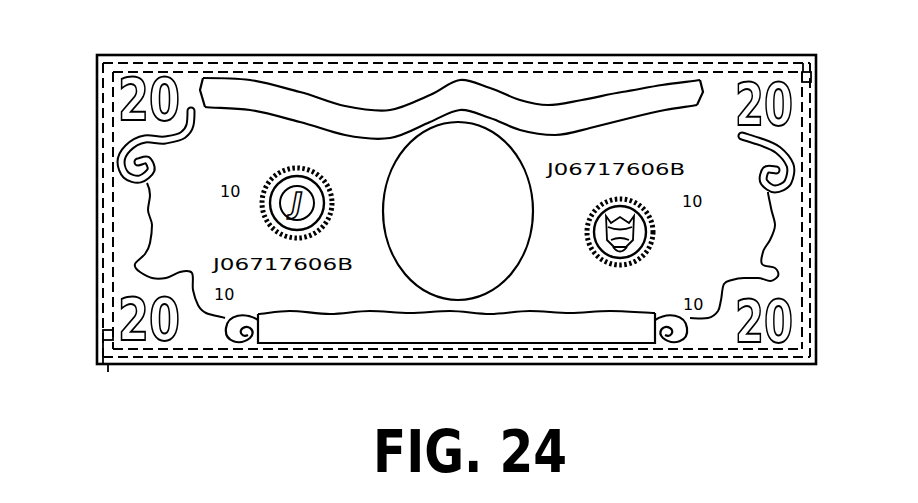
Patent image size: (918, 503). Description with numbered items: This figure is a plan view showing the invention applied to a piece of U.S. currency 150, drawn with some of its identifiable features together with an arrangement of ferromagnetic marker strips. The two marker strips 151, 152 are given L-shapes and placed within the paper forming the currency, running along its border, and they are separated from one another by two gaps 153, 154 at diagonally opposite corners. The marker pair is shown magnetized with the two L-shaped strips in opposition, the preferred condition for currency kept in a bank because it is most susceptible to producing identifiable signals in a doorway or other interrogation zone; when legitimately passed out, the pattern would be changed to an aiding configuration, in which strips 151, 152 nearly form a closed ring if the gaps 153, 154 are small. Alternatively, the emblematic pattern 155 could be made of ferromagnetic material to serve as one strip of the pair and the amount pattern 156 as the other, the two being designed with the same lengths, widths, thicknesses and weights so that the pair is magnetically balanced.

The piece of U.S. currency 150 is at (132, 223).
The ferromagnetic marker strip 151 is at (107, 122).
The ferromagnetic marker strip 152 is at (802, 257).
The gap 153 is at (815, 72).
The gap 154 is at (104, 331).
The emblematic pattern 155 is at (481, 100).
The amount pattern 156 is at (592, 335).